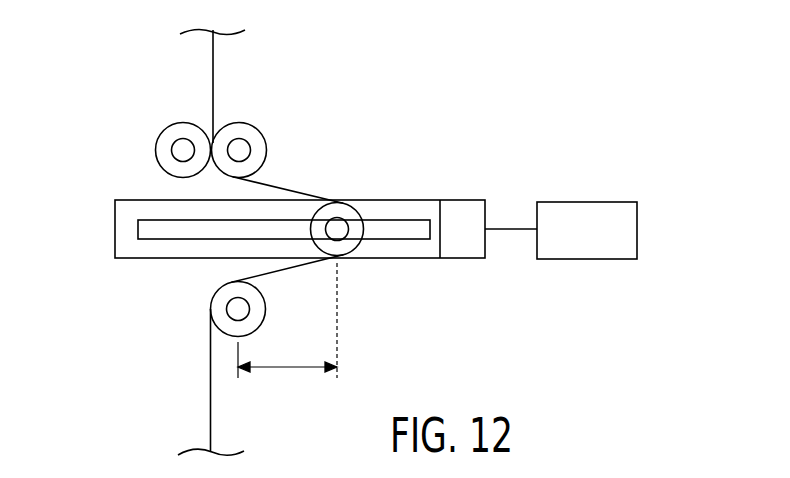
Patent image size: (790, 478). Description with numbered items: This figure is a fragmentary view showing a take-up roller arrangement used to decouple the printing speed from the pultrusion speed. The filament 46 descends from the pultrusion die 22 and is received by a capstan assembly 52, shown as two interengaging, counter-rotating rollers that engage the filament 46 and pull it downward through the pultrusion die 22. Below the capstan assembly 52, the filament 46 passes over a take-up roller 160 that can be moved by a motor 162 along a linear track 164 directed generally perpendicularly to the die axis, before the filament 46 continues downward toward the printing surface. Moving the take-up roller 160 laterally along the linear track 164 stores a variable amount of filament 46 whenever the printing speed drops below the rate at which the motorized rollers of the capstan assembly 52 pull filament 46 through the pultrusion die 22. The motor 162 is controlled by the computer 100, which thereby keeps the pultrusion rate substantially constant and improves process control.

The pultrusion die 22 is at (152, 62).
The filament 46 is at (213, 90).
The capstan assembly 52 is at (277, 128).
The electronic computer 100 is at (588, 202).
The take-up roller 160 is at (357, 243).
The motor 162 is at (462, 201).
The linear track 164 is at (115, 242).